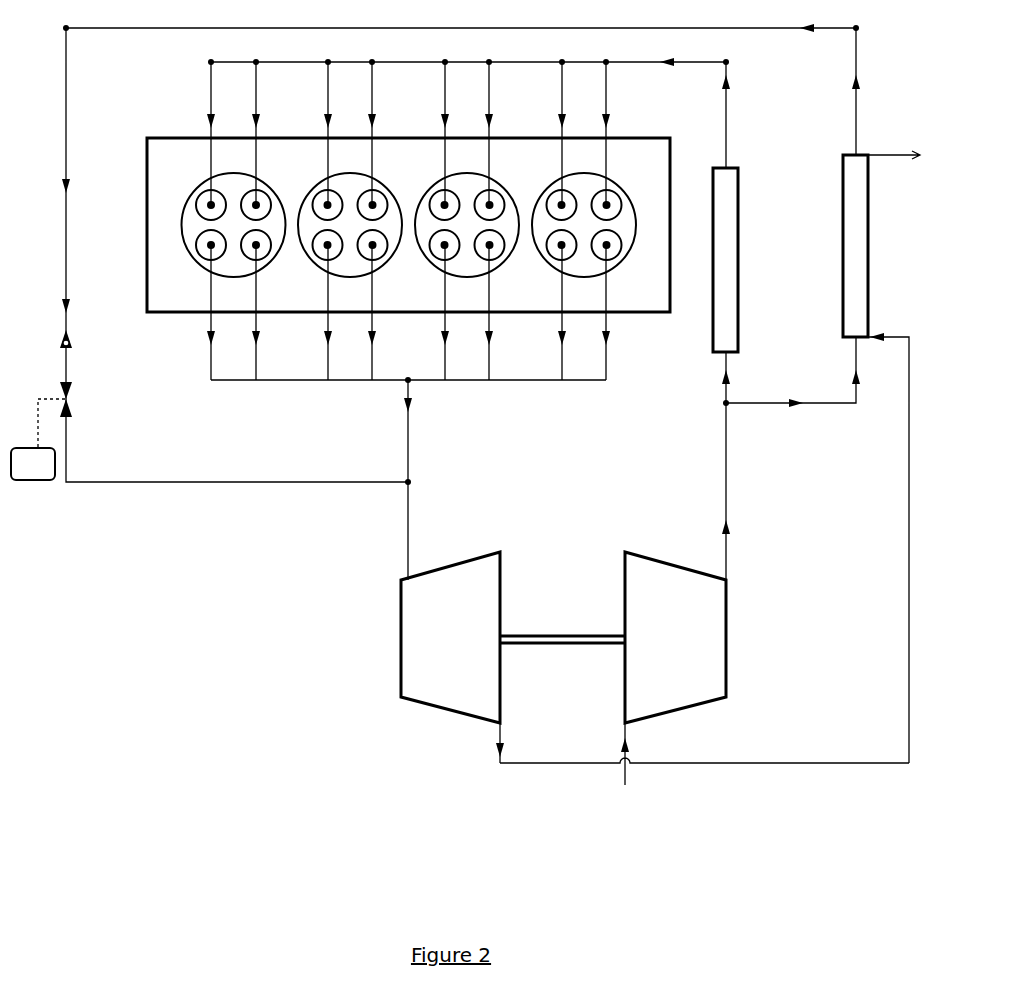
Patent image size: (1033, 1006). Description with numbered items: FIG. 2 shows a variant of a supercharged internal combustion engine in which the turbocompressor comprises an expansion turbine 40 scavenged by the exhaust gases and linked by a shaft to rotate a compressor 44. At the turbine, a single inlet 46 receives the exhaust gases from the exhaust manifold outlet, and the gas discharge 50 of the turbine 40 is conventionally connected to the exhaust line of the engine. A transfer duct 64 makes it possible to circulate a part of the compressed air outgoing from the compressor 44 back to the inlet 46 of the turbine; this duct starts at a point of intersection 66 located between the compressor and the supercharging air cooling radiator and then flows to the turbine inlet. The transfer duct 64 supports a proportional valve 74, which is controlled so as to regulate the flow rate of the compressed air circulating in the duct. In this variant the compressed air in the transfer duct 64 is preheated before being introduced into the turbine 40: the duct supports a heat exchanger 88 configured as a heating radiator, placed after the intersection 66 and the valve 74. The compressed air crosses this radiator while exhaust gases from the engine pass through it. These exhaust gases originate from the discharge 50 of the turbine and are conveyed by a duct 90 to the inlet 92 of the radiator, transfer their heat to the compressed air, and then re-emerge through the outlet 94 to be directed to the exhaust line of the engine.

The expansion turbine 40 is at (550, 637).
The compressor 44 is at (730, 686).
The inlet 46 is at (410, 585).
The gas discharge 50 is at (500, 726).
The transfer duct 64 is at (843, 402).
The point of intersection 66 is at (726, 403).
The valve 74 is at (68, 407).
The heat exchanger 88 is at (843, 238).
The duct 90 is at (570, 763).
The inlet 92 is at (875, 332).
The outlet 94 is at (870, 157).